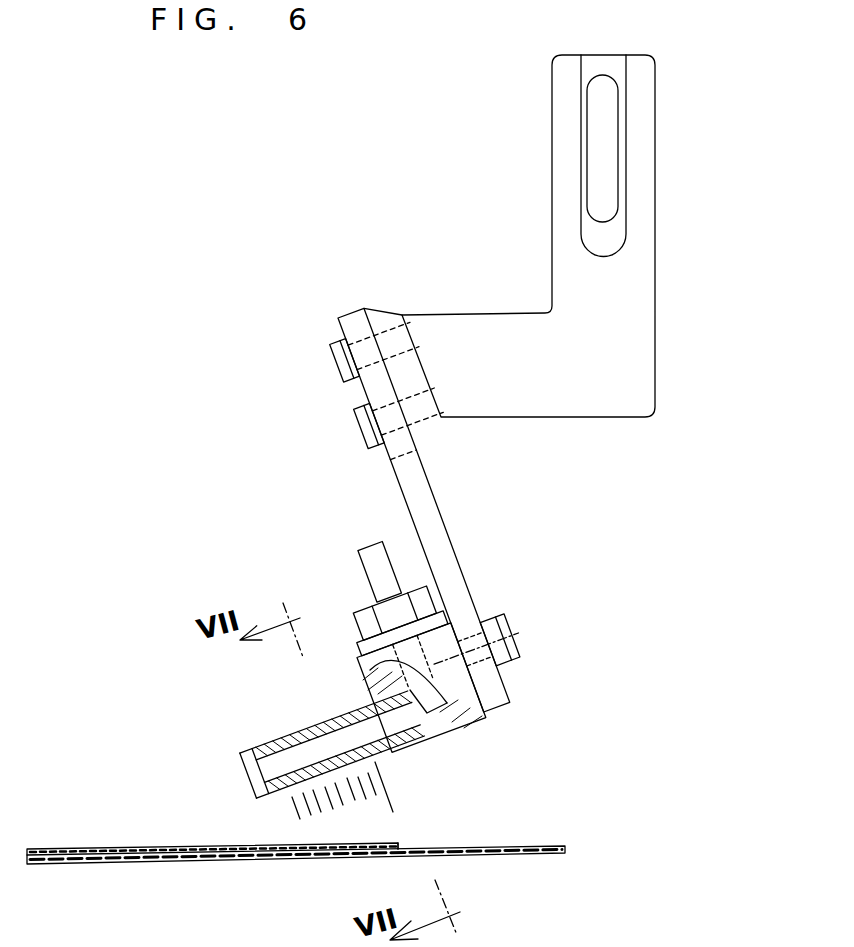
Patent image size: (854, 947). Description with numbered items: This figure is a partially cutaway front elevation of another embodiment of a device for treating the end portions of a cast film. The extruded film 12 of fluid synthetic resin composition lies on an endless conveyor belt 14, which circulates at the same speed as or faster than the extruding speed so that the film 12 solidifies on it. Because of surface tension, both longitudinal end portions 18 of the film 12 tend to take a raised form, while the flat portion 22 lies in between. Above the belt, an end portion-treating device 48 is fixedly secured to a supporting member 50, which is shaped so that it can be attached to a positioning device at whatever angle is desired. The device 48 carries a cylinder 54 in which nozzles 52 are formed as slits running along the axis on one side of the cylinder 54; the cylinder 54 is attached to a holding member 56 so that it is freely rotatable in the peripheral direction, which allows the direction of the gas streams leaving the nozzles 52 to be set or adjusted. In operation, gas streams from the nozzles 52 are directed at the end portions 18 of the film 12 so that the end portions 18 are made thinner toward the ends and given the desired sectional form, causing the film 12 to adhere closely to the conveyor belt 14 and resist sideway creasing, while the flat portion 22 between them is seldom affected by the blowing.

The film 12 is at (296, 855).
The conveyor belt 14 is at (497, 853).
The end portions 18 is at (392, 843).
The flat portion 22 is at (235, 846).
The end portion-treating device 48 is at (165, 468).
The supporting member 50 is at (563, 215).
The nozzles 52 is at (352, 760).
The cylinder 54 is at (280, 740).
The holding member 56 is at (450, 640).